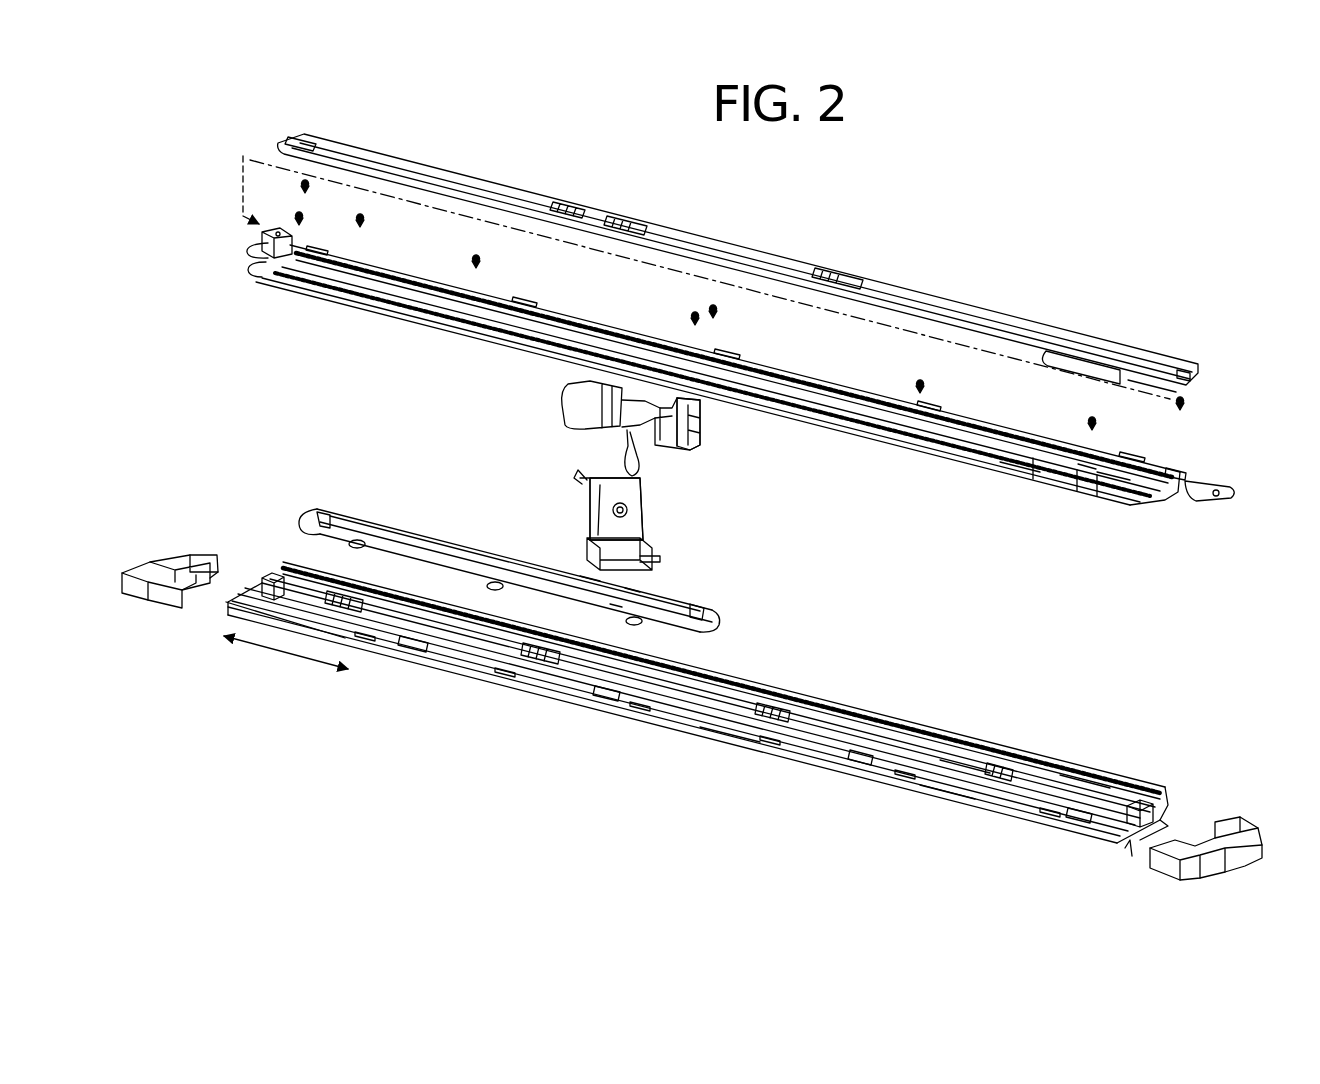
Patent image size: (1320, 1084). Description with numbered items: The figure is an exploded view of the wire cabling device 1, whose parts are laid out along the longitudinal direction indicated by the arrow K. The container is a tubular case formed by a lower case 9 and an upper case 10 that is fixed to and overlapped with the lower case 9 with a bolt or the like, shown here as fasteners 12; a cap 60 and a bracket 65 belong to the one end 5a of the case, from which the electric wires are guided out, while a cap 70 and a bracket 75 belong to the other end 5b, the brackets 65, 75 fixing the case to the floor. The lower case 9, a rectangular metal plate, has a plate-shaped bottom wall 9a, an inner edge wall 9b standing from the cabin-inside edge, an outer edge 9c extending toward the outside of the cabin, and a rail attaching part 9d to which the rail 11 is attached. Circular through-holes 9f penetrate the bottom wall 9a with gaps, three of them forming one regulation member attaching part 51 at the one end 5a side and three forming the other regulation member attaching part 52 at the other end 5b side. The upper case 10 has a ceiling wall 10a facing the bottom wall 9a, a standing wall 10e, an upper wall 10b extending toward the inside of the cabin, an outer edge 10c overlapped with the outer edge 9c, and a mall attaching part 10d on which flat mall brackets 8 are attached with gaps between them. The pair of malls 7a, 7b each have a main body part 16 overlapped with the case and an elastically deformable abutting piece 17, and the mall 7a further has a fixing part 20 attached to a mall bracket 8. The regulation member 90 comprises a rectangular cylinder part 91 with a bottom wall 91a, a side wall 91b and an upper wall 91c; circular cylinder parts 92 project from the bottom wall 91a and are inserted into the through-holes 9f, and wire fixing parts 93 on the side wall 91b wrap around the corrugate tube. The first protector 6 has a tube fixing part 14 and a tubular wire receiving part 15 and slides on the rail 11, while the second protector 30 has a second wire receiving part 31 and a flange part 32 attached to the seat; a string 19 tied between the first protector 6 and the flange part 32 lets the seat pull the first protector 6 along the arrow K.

The wire cabling device 1 is at (906, 234).
The one end of the case 5a is at (266, 570).
The other end of the case 5b is at (1125, 856).
The first protector 6 is at (654, 516).
The mall 7a is at (1150, 378).
The mall 7b is at (1085, 781).
The mall bracket 8 is at (320, 247).
The lower case 9 is at (851, 777).
The bottom wall 9a is at (730, 743).
The inner edge wall 9b is at (1158, 788).
The outer edge 9c is at (946, 793).
The rail attaching part 9d is at (1163, 831).
The through-hole 9f is at (365, 643).
The upper case 10 is at (895, 448).
The ceiling wall 10a is at (1032, 464).
The upper wall 10b is at (1182, 468).
The outer edge 10c is at (1002, 462).
The mall attaching part 10d is at (1097, 470).
The standing wall 10e is at (1078, 462).
The rail 11 is at (965, 769).
The rivet 12 is at (298, 208).
The tube fixing part 14 is at (641, 553).
The wire receiving part 15 is at (604, 514).
The main body part 16 is at (1045, 333).
The abutting piece 17 is at (1093, 335).
The string 19 is at (625, 452).
The fixing part 20 is at (1068, 358).
The second protector 30 is at (711, 452).
The second wire receiving part 31 is at (568, 404).
The flange part 32 is at (702, 424).
The regulation member attaching part 51 is at (661, 793).
The regulation member attaching part 52 is at (1039, 909).
The cap 60 is at (170, 614).
The bracket 65 is at (264, 222).
The cap 70 is at (1165, 866).
The bracket 75 is at (1216, 481).
The regulation member 90 is at (408, 523).
The rectangular cylinder part 91 is at (455, 549).
The bottom wall 91a is at (612, 607).
The side wall 91b is at (583, 575).
The upper wall 91c is at (631, 591).
The circular cylinder part 92 is at (363, 548).
The wire fixing part 93 is at (304, 522).
The arrow K is at (270, 662).